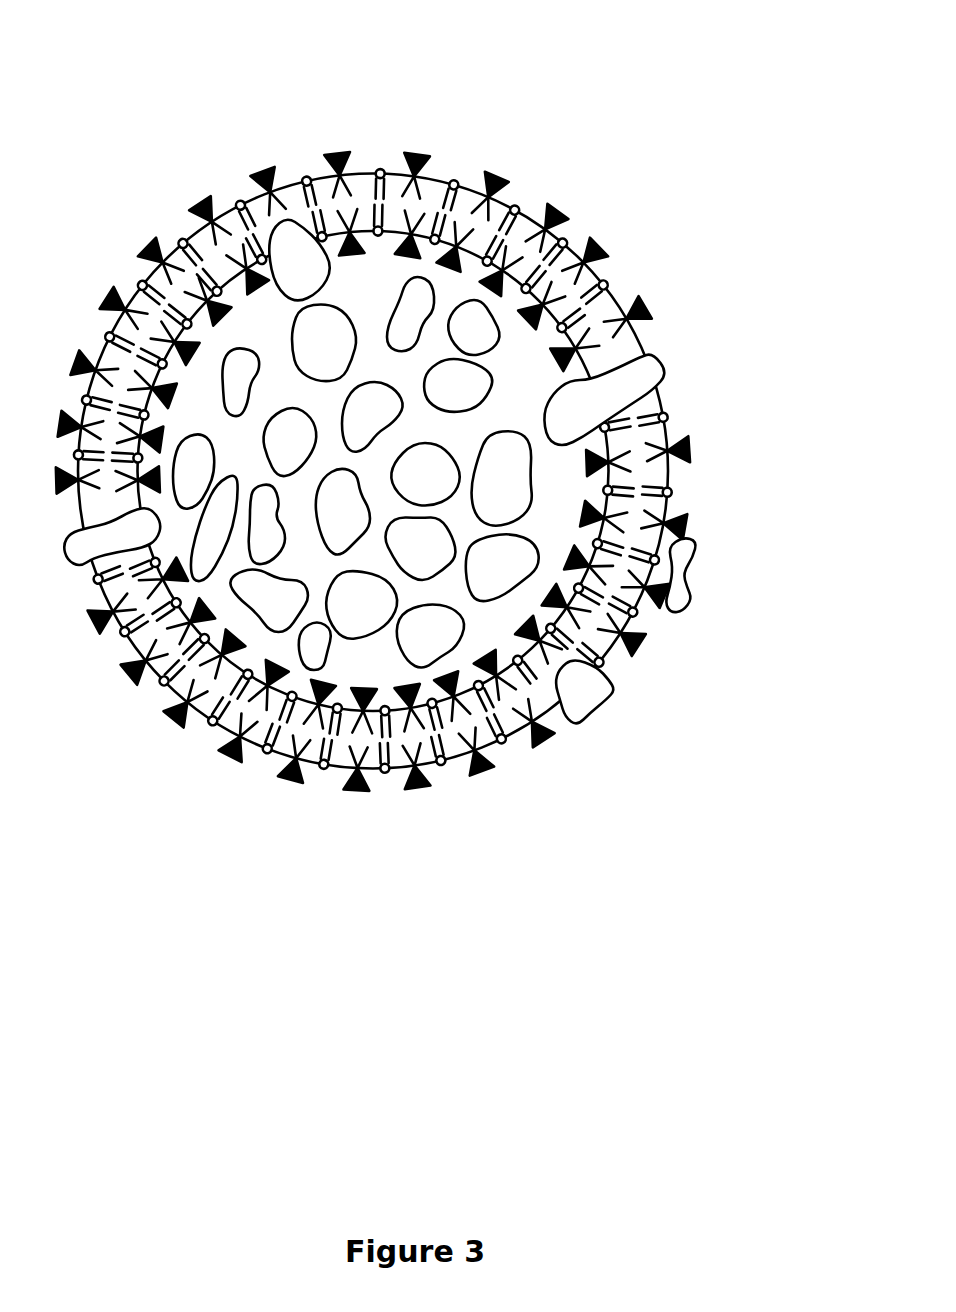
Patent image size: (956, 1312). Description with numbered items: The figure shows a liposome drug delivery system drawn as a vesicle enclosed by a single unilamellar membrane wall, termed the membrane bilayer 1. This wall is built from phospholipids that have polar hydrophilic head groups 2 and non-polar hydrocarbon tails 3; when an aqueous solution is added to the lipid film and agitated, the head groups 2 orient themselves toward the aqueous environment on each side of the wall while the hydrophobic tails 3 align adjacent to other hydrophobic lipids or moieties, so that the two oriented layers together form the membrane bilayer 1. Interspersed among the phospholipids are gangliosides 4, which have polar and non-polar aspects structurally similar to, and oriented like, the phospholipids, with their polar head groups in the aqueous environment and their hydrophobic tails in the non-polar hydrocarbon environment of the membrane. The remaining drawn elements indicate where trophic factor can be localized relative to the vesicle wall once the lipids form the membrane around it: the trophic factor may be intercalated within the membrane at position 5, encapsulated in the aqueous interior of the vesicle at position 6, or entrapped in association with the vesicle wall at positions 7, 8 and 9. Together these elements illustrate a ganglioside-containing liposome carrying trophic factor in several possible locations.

The membrane bilayer 1 is at (560, 245).
The polar hydrophilic head groups 2 is at (605, 288).
The non-polar hydrocarbon tails 3 is at (573, 327).
The gangliosides 4 is at (422, 160).
The intercalated trophic factor 5 is at (650, 370).
The encapsulated trophic factor 6 is at (515, 483).
The entrapped trophic factor 7 is at (683, 597).
The entrapped trophic factor 8 is at (603, 685).
The entrapped trophic factor 9 is at (288, 230).